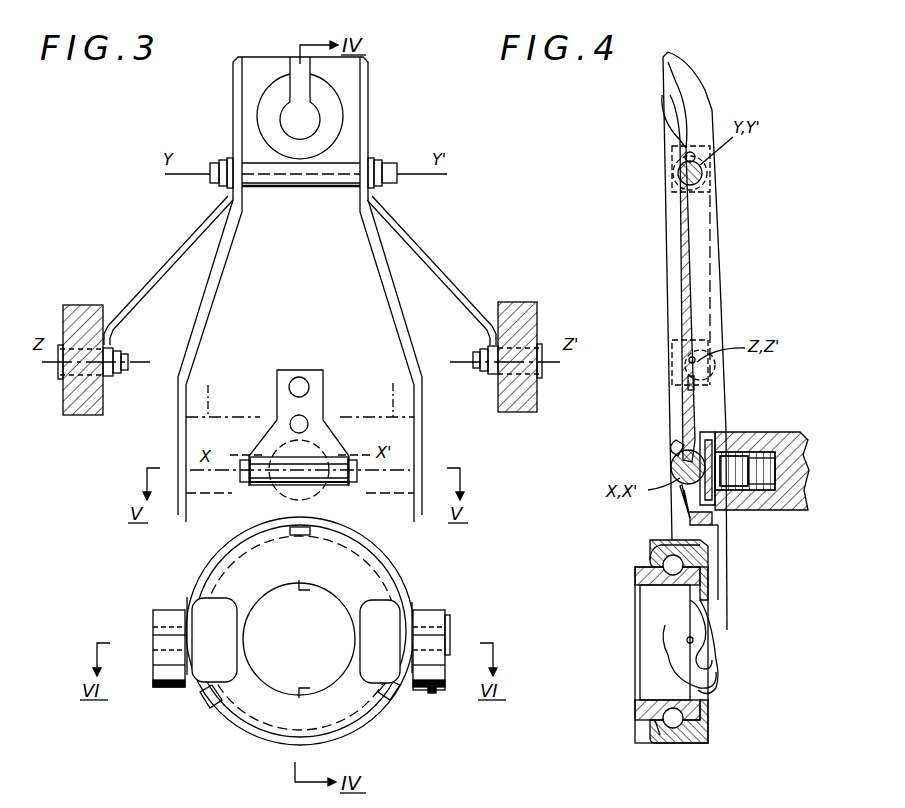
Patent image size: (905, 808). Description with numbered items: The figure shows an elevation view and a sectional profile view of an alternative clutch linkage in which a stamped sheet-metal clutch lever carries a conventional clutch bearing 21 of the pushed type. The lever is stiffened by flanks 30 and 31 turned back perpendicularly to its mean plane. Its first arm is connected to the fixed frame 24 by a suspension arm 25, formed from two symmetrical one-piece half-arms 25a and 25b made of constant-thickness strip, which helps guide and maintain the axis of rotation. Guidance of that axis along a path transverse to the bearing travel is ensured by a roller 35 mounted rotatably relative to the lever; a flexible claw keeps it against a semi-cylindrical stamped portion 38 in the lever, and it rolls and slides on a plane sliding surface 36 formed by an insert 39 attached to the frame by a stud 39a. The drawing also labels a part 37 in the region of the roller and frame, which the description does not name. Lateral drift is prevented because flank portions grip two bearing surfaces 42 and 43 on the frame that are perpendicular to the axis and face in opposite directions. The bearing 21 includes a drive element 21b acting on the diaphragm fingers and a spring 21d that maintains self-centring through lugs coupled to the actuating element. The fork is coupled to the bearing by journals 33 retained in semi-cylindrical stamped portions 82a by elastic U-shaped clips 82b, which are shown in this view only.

In FIG. 3, the clutch bearing 21 is at (243, 708).
In FIG. 4, the clutch bearing 21 is at (640, 705).
In FIG. 4, the drive element 21b is at (635, 572).
In FIG. 4, the spring 21d is at (655, 722).
In FIG. 4, the fixed frame 24 is at (788, 432).
In FIG. 3, the suspension arm 25 is at (306, 262).
In FIG. 3, the half-arm 25a is at (168, 265).
In FIG. 3, the half-arm 25b is at (453, 280).
In FIG. 3, the flank 30 is at (150, 565).
In FIG. 3, the flank 31 is at (452, 563).
In FIG. 3, the journal 33 is at (448, 607).
In FIG. 4, the journal 33 is at (690, 625).
In FIG. 3, the roller 35 is at (325, 452).
In FIG. 4, the roller 35 is at (674, 462).
In FIG. 4, the sliding surface 36 is at (690, 495).
In FIG. 3, the bracket 37 is at (284, 404).
In FIG. 4, the bracket 37 is at (700, 440).
In FIG. 4, the semi-cylindrical stamped portion 38 is at (676, 446).
In FIG. 3, the insert 39 is at (285, 492).
In FIG. 4, the insert 39 is at (727, 500).
In FIG. 4, the stud 39a is at (758, 484).
In FIG. 3, the bearing surface 42 is at (223, 390).
In FIG. 3, the bearing surface 43 is at (377, 385).
In FIG. 3, the semi-cylindrical stamped portion 82a is at (452, 628).
In FIG. 4, the semi-cylindrical stamped portion 82a is at (712, 637).
In FIG. 3, the elastic U-shaped clip 82b is at (442, 692).
In FIG. 4, the elastic U-shaped clip 82b is at (718, 673).